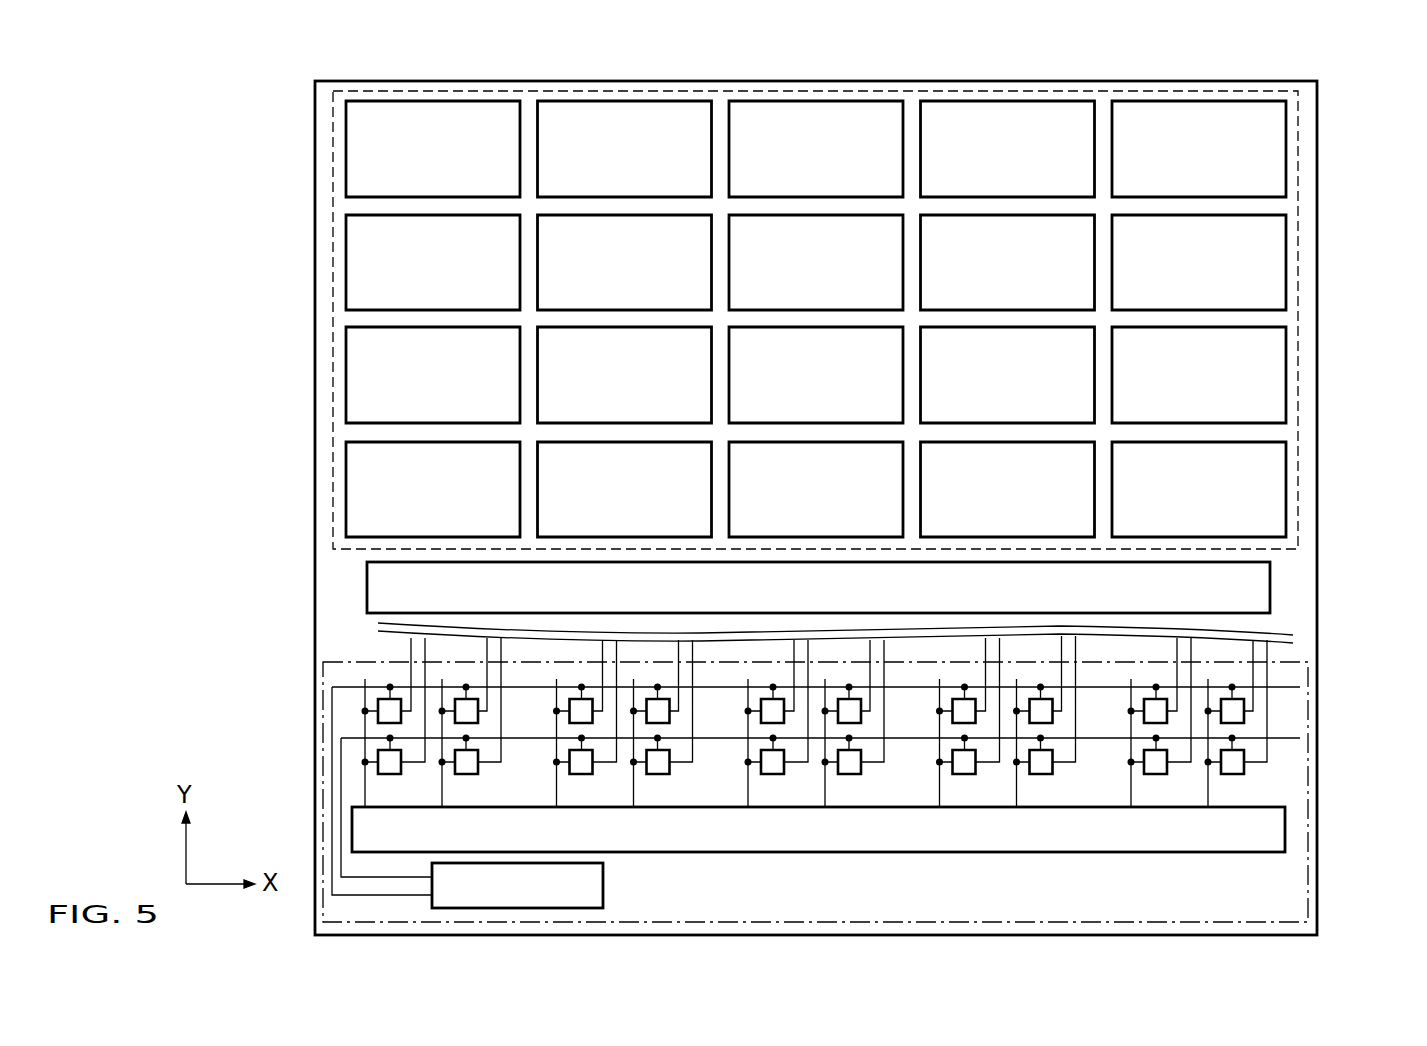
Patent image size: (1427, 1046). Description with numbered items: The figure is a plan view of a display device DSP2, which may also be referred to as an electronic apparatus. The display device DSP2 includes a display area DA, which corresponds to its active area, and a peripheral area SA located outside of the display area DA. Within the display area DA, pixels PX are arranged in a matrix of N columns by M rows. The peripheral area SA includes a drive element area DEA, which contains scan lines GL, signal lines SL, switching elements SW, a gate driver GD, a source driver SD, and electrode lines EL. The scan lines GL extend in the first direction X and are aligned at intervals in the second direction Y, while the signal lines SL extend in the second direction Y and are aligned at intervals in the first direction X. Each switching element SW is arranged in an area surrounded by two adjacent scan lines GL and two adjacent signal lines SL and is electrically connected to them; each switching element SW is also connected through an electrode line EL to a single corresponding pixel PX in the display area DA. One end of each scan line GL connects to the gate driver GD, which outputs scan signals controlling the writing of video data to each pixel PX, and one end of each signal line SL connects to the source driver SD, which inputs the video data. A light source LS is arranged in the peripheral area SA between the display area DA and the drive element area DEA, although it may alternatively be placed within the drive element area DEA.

The display device DSP2 is at (1307, 72).
The display area DA is at (1299, 120).
The peripheral area SA is at (1310, 278).
The pixel PX is at (346, 142).
The light source LS is at (1270, 588).
The electrode line EL is at (411, 650).
The switching element SW is at (378, 719).
The signal line SL is at (367, 793).
The scan line GL is at (332, 827).
The gate driver GD is at (603, 885).
The source driver SD is at (1182, 855).
The drive element area DEA is at (1308, 820).